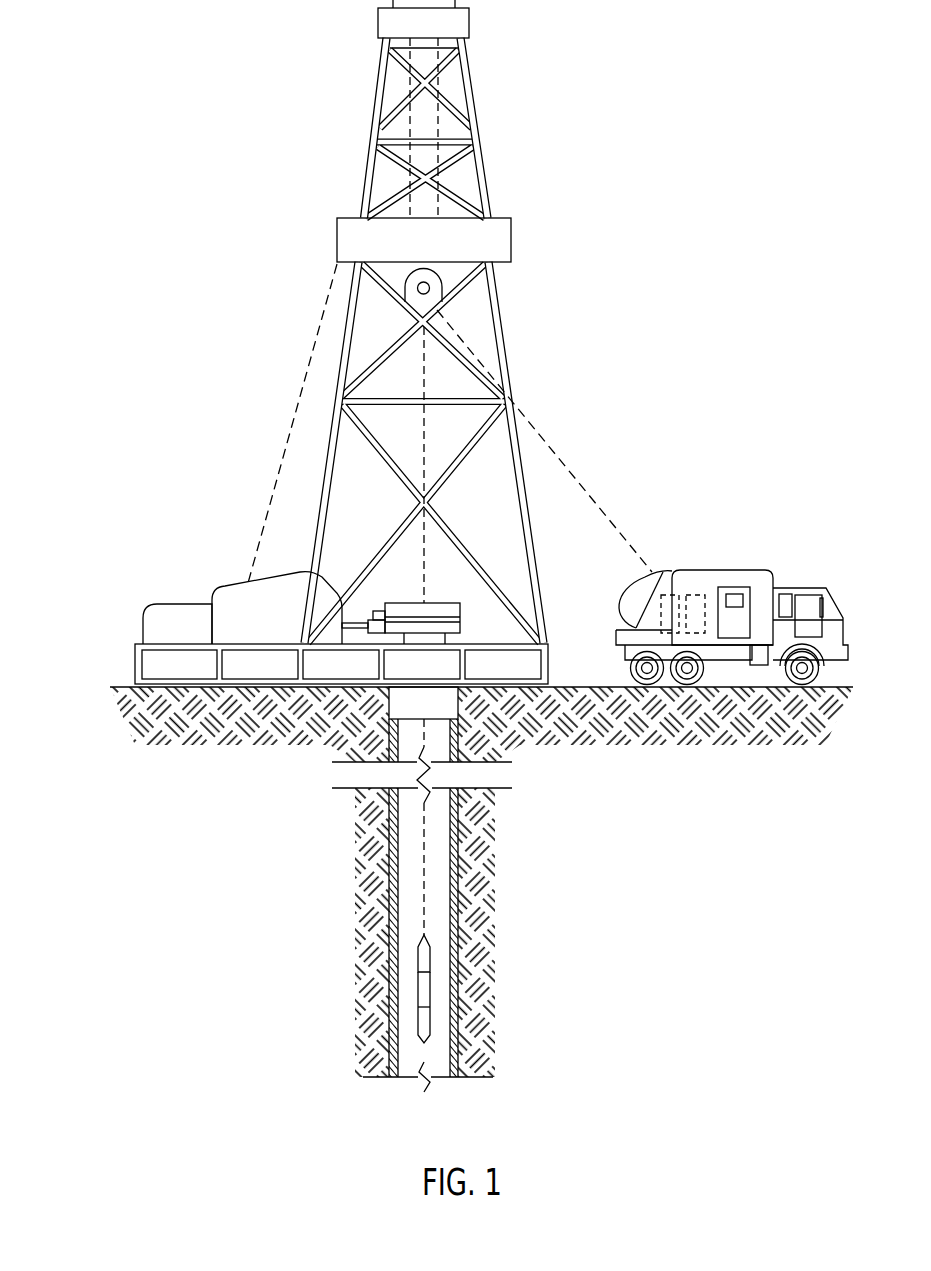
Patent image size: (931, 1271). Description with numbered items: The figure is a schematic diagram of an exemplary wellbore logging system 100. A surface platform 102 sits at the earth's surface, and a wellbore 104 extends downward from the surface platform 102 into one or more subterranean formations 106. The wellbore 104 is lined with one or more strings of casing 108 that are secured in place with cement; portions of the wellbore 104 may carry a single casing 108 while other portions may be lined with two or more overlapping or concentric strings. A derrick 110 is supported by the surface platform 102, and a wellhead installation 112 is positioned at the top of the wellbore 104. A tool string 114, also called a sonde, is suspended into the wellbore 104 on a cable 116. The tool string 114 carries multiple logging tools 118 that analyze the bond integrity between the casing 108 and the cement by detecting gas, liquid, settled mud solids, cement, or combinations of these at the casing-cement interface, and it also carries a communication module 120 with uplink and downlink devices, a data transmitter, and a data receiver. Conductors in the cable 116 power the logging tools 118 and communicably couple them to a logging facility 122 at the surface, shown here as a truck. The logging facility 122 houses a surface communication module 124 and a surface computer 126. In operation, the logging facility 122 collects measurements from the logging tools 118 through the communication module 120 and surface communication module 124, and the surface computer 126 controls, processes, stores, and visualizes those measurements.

The wellbore logging system 100 is at (451, 546).
The surface platform 102 is at (295, 628).
The wellbore 104 is at (480, 885).
The subterranean formations 106 is at (460, 889).
The casing 108 is at (377, 900).
The derrick 110 is at (437, 321).
The wellhead installation 112 is at (421, 570).
The tool string 114 is at (353, 896).
The cable 116 is at (450, 423).
The logging tools 118 is at (356, 989).
The communication module 120 is at (356, 953).
The logging facility 122 is at (732, 582).
The surface communication module 124 is at (670, 556).
The surface computer 126 is at (710, 571).